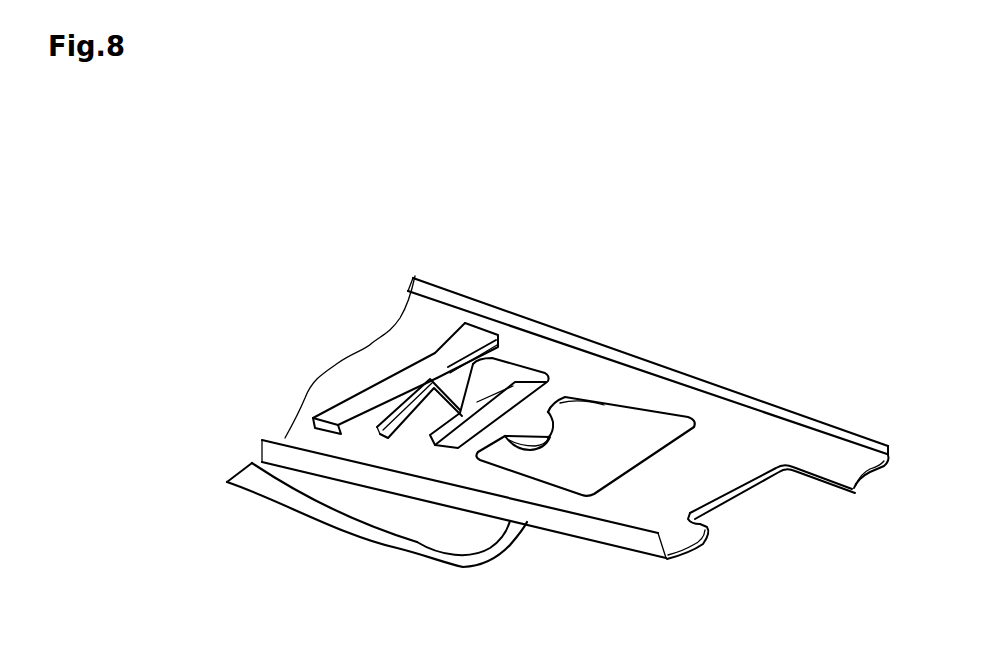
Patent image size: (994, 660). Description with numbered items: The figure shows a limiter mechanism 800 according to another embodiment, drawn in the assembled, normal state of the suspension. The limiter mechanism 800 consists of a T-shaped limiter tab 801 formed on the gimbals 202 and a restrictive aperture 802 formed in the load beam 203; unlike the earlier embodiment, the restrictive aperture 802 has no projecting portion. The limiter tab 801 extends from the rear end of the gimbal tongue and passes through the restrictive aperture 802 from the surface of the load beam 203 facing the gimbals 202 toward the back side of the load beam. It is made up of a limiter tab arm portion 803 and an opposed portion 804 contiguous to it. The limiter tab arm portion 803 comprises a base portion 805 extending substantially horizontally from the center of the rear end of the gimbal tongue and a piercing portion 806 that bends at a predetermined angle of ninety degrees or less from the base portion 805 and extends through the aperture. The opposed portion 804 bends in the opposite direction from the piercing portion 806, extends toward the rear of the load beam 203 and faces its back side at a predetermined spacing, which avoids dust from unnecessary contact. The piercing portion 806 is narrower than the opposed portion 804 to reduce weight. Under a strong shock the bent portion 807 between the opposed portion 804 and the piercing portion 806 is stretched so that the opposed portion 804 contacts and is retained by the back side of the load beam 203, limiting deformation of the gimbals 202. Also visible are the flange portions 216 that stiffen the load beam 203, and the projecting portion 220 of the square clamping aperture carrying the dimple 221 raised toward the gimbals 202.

The limiter mechanism 800 is at (772, 197).
The limiter tab 801 is at (737, 397).
The restrictive aperture 802 is at (505, 382).
The limiter tab arm portion 803 is at (479, 230).
The opposed portion 804 is at (335, 413).
The base portion 805 is at (462, 385).
The piercing portion 806 is at (458, 380).
The bent portion 807 is at (430, 378).
The load beam 203 is at (806, 446).
The gimbals 202 is at (283, 500).
The projecting portion 220 is at (548, 410).
The dimple 221 is at (527, 448).
The flange portions 216 is at (628, 425).